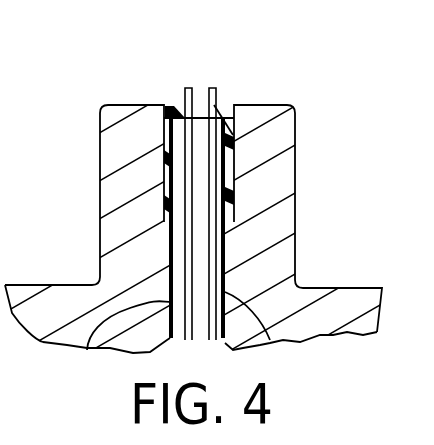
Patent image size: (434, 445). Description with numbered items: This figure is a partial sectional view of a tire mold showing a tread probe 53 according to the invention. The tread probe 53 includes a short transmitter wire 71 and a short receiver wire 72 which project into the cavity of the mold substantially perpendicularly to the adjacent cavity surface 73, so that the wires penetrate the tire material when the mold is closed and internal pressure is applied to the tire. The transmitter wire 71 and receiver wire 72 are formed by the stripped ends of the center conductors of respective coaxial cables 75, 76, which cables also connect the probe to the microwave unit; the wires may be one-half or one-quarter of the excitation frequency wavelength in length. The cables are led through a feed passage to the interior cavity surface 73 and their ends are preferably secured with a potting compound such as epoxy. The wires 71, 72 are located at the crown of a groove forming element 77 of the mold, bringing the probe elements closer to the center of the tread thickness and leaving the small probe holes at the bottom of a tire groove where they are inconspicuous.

The tread probe 53 is at (172, 77).
The transmitter wire 71 is at (188, 88).
The receiver wire 72 is at (210, 86).
The cavity surface 73 is at (128, 104).
The coaxial cable 75 is at (87, 350).
The coaxial cable 76 is at (270, 340).
The groove forming element 77 is at (295, 180).